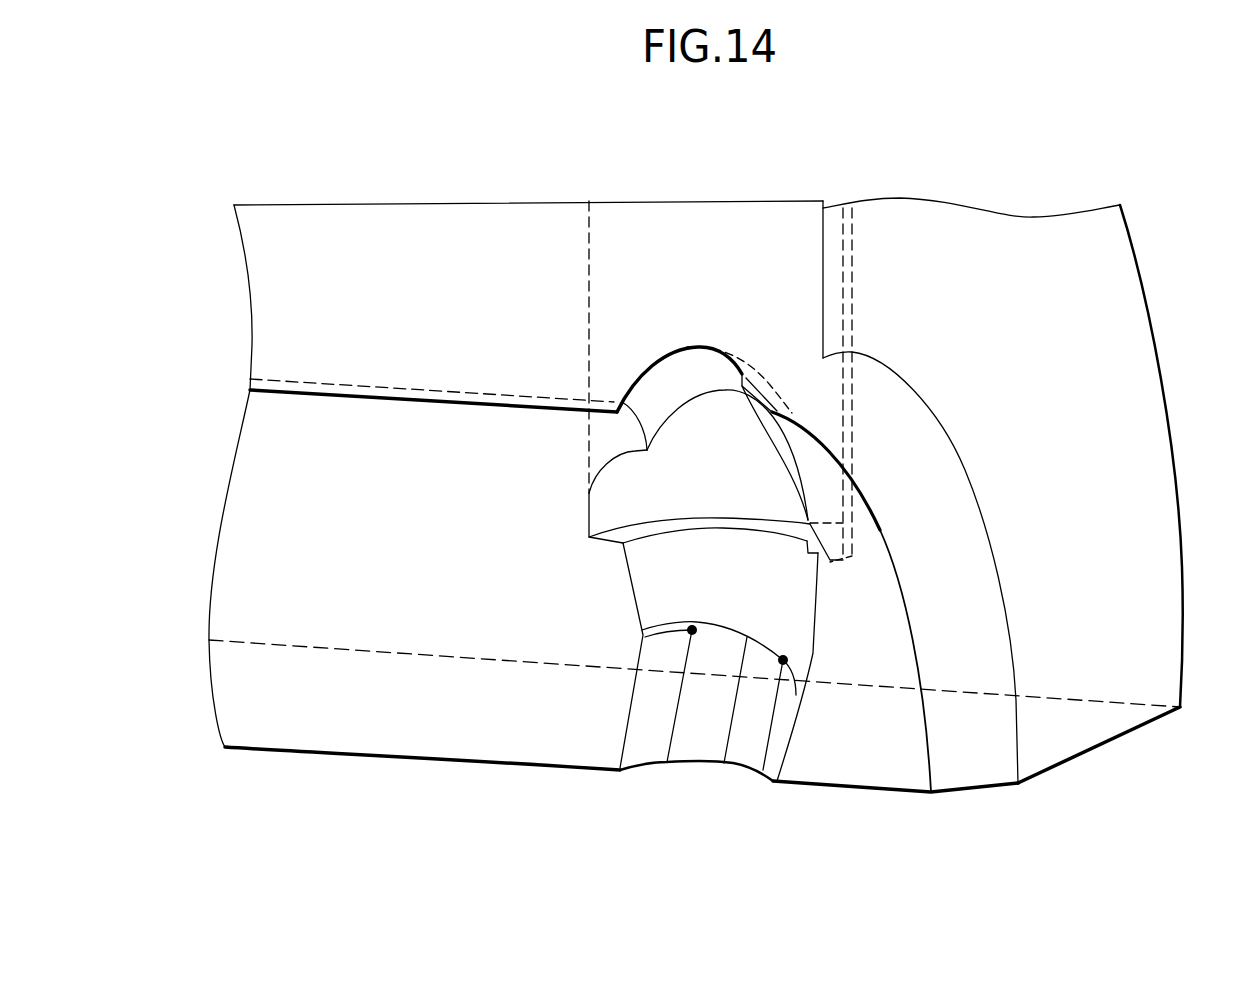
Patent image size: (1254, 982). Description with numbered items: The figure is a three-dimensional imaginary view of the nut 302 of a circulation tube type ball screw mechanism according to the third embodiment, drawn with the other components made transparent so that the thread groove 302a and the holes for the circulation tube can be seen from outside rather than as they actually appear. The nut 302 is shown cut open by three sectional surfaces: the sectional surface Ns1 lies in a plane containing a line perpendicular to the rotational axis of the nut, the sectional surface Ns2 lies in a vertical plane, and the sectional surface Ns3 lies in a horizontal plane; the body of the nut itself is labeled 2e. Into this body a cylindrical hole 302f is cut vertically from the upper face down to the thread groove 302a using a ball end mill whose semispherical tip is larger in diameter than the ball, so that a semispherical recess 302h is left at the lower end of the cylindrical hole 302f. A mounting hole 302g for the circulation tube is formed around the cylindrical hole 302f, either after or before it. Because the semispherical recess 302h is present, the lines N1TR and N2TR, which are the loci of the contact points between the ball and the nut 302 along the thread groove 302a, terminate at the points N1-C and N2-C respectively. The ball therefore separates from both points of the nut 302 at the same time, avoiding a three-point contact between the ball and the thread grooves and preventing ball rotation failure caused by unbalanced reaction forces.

The sectional surface Ns2 is at (405, 257).
The sectional surface Ns1 is at (1100, 270).
The sectional surface Ns3 is at (1130, 708).
The blade body 2e is at (250, 497).
The nut 302 is at (1053, 742).
The mounting hole 302g is at (593, 263).
The thread groove 302a is at (688, 377).
The cylindrical hole 302f is at (642, 583).
The semispherical recess 302h is at (800, 640).
The termination point N1-C is at (688, 630).
The termination point N2-C is at (788, 660).
The locus line of contact points N1TR is at (663, 764).
The locus line of contact points N2TR is at (763, 776).